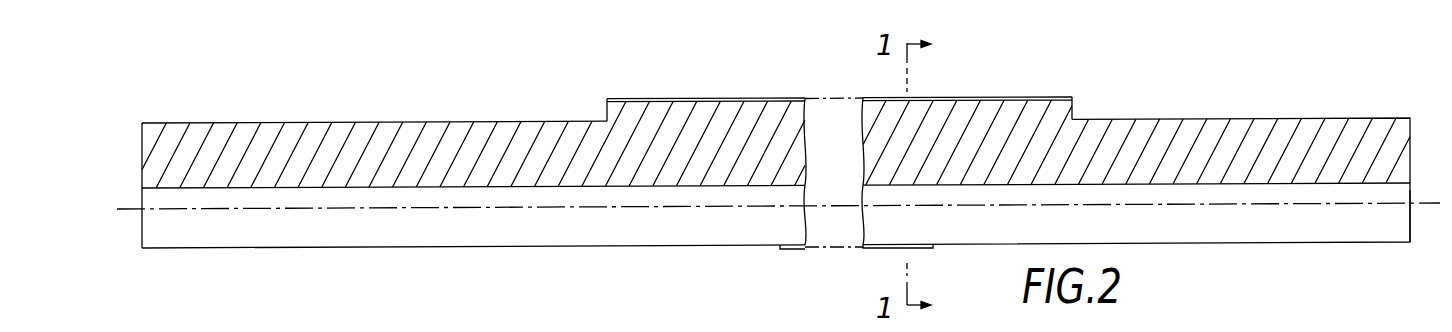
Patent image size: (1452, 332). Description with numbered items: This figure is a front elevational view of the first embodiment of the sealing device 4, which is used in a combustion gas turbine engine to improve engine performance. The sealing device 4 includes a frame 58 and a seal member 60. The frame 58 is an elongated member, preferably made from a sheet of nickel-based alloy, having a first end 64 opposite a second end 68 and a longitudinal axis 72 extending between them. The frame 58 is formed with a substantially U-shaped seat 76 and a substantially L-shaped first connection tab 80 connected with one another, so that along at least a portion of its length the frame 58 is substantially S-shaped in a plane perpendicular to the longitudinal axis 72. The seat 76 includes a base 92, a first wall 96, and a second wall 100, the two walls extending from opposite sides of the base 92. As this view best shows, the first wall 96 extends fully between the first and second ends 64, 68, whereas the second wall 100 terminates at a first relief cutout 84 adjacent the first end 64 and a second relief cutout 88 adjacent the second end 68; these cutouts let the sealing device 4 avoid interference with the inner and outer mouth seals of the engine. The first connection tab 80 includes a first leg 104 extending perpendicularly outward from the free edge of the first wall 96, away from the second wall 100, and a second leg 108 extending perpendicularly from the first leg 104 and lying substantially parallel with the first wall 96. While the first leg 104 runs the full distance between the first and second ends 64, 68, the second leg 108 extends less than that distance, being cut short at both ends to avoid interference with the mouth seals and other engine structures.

The sealing device 4 is at (672, 90).
The frame 58 is at (1414, 122).
The seal member 60 is at (711, 152).
The first end 64 is at (1410, 190).
The second end 68 is at (142, 194).
The longitudinal axis 72 is at (1250, 204).
The seat 76 is at (740, 92).
The first connection tab 80 is at (703, 255).
The first relief cutout 84 is at (1100, 118).
The second relief cutout 88 is at (490, 122).
The base 92 is at (142, 136).
The first wall 96 is at (173, 187).
The second wall 100 is at (638, 100).
The first leg 104 is at (1412, 218).
The second leg 108 is at (792, 249).